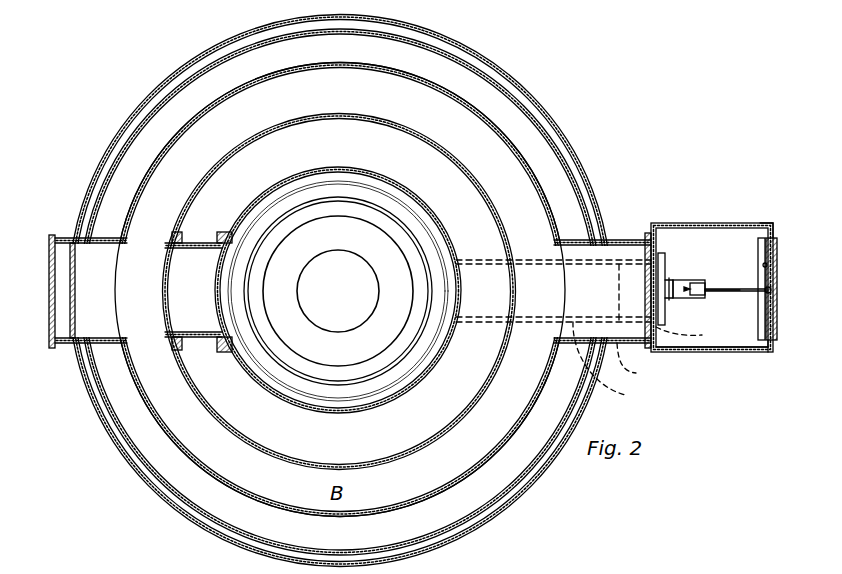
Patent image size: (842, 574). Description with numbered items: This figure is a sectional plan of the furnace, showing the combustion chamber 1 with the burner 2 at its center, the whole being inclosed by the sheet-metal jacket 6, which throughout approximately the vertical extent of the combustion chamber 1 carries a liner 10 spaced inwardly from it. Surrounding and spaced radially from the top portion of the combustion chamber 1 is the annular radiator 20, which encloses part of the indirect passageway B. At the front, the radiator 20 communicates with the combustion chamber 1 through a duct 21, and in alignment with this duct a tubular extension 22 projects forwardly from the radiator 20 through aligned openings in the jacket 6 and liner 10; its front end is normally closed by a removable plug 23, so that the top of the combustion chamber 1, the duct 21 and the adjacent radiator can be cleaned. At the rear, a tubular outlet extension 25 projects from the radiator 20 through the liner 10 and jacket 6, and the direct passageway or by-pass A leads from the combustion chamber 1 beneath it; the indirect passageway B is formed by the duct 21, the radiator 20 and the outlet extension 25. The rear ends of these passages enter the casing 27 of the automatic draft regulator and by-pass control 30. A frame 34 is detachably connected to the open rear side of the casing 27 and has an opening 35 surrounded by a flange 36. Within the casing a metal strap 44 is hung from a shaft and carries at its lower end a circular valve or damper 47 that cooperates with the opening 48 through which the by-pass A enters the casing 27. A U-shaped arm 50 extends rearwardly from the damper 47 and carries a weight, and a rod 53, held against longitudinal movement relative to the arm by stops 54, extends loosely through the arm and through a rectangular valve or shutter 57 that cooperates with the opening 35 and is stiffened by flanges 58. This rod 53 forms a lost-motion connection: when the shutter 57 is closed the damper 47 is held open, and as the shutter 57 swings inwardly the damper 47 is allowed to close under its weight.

The combustion chamber 1 is at (414, 392).
The burner 2 is at (338, 306).
The jacket 6 is at (496, 518).
The liner 10 is at (507, 90).
The annular radiator 20 is at (340, 290).
The duct 21 is at (212, 229).
The tubular extension 22 is at (108, 236).
The removable plug 23 is at (49, 250).
The tubular outlet extension 25 is at (602, 250).
The casing 27 is at (748, 352).
The automatic draft regulator and by-pass control 30 is at (690, 352).
The frame 34 is at (773, 356).
The opening 35 is at (776, 324).
The flange 36 is at (785, 242).
The metal strap 44 is at (668, 289).
The circular valve or damper 47 is at (670, 270).
The opening 48 is at (691, 337).
The arm 50 is at (697, 285).
The rod 53 is at (704, 300).
The stops 54 is at (706, 294).
The rectangular valve or shutter 57 is at (763, 262).
The flanges 58 is at (746, 247).
The direct passageway or by-pass A is at (604, 367).
The indirect passageway B is at (632, 364).